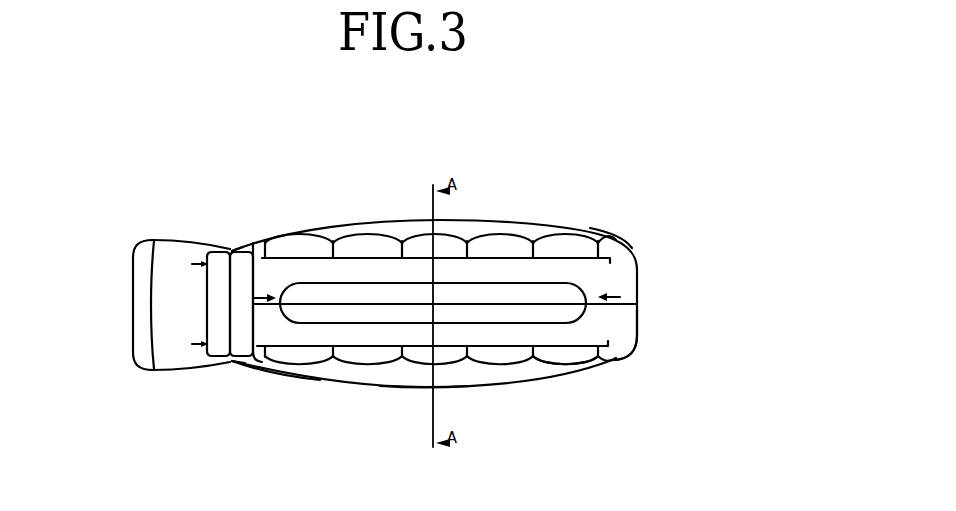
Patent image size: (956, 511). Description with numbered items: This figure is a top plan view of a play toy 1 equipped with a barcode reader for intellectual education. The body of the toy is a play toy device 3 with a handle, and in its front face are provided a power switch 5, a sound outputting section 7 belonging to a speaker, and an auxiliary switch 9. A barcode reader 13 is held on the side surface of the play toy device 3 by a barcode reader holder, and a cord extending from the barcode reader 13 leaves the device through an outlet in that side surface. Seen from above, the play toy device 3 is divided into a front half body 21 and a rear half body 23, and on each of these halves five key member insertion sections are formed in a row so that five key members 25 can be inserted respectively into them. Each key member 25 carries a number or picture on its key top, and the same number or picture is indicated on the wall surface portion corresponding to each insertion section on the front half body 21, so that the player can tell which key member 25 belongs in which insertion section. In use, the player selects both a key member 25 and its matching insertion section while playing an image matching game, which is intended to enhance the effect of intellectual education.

The play toy 1 is at (640, 274).
The play toy device 3 is at (628, 324).
The power switch 5 is at (325, 379).
The sound outputting section 7 is at (450, 387).
The auxiliary switch 9 is at (563, 372).
The barcode reader 13 is at (193, 248).
The front half body 21 is at (623, 348).
The rear half body 23 is at (630, 257).
The key member 25 is at (372, 248).